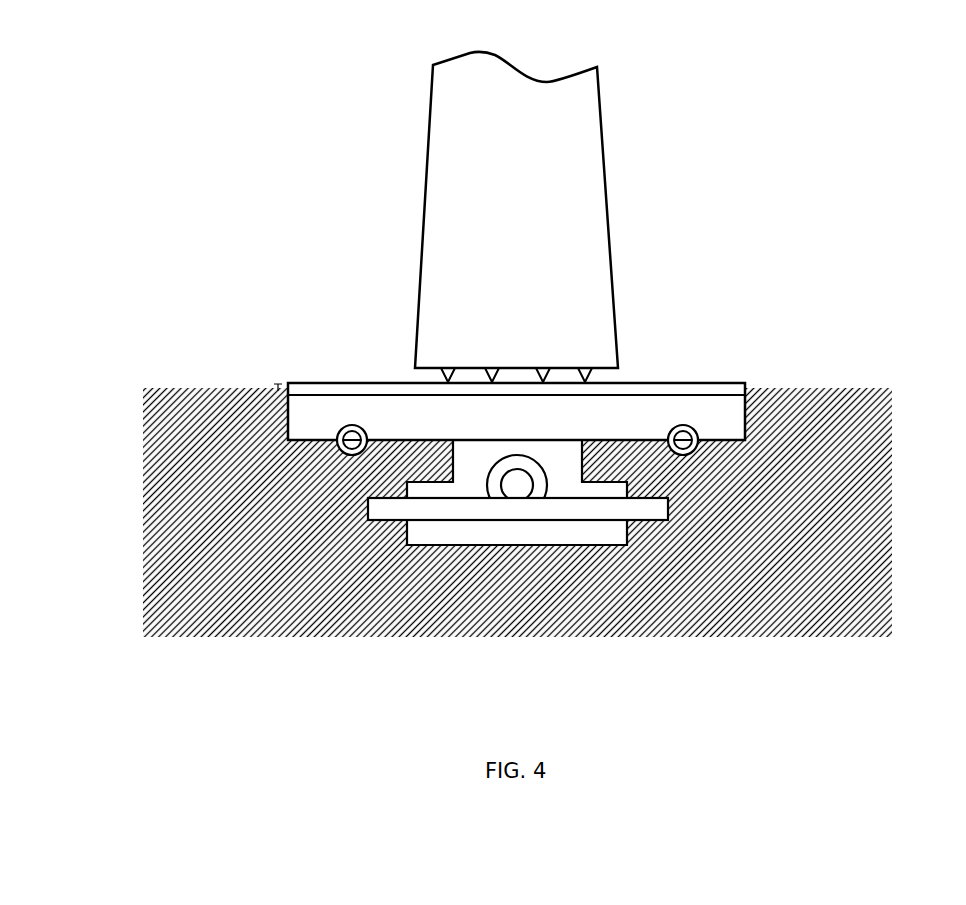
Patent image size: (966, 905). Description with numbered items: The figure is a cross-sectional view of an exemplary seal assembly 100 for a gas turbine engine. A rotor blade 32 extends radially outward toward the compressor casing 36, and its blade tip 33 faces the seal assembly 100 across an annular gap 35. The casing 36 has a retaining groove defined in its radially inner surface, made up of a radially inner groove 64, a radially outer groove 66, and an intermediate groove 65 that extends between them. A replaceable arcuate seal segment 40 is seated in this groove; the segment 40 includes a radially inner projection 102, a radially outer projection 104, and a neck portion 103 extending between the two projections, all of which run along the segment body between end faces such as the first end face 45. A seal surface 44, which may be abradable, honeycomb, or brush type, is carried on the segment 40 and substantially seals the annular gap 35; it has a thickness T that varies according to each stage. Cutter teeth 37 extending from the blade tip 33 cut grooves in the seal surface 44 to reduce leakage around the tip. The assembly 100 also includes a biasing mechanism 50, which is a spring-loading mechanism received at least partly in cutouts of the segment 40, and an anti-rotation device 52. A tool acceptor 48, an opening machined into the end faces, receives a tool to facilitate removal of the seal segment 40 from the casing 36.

The seal assembly 100 is at (815, 163).
The rotor blade 32 is at (516, 210).
The blade tip 33 is at (597, 325).
The annular gap 35 is at (412, 373).
The cutter tooth 37 is at (572, 372).
The seal segment 40 is at (297, 375).
The seal surface 44 is at (710, 390).
The first end face 45 is at (733, 407).
The thickness T is at (275, 388).
The radially inner projection 102 is at (820, 402).
The radially inner groove 64 is at (748, 428).
The biasing mechanism 50 is at (337, 447).
The compressor casing 36 is at (170, 530).
The intermediate groove 65 is at (452, 446).
The neck portion 103 is at (460, 467).
The anti-rotation device 52 is at (388, 510).
The tool acceptor 48 is at (540, 488).
The radially outer projection 104 is at (607, 533).
The radially outer groove 66 is at (632, 531).